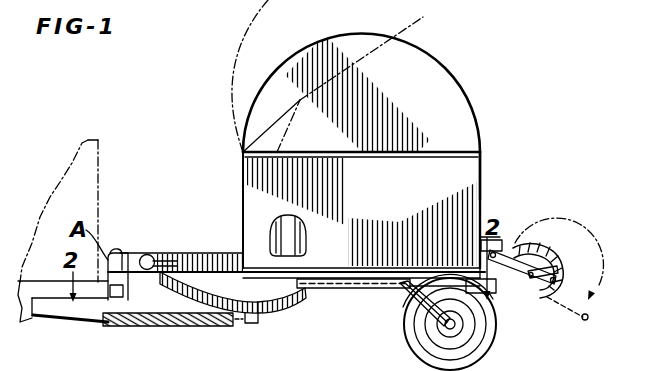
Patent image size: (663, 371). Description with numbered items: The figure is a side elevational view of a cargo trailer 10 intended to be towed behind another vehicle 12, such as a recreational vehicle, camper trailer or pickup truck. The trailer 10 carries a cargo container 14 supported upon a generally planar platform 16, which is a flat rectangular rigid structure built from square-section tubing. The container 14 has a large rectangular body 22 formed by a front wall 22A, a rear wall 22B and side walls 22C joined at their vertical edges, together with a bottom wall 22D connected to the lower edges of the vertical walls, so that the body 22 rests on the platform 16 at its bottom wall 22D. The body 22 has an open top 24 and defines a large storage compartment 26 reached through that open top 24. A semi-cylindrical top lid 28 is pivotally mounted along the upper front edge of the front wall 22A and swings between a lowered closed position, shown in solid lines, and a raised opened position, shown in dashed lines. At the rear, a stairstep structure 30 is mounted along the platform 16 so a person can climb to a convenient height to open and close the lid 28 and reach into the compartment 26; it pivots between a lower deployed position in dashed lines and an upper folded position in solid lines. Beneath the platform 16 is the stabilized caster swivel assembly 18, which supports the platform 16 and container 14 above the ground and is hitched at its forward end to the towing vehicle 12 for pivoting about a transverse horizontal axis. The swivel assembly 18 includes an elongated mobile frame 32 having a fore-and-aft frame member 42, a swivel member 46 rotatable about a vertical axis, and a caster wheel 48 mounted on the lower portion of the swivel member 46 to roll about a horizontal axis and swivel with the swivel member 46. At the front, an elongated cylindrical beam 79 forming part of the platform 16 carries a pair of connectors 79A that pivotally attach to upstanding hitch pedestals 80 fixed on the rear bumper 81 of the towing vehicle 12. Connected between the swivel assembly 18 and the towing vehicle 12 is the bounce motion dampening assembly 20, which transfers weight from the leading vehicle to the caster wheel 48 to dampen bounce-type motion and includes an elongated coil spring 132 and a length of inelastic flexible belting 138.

The cargo trailer 10 is at (510, 104).
The towing vehicle 12 is at (98, 147).
The cargo container 14 is at (488, 176).
The planar platform 16 is at (210, 256).
The stabilized caster swivel assembly 18 is at (372, 300).
The bounce motion dampening assembly 20 is at (213, 333).
The rectangular body 22 is at (484, 213).
The front wall 22A is at (243, 172).
The rear wall 22B is at (482, 154).
The side wall 22C is at (396, 212).
The bottom wall 22D is at (483, 314).
The open top 24 is at (452, 150).
The storage compartment 26 is at (286, 232).
The semi-cylindrical top lid 28 is at (428, 58).
The stairstep structure 30 is at (545, 256).
The elongated mobile frame 32 is at (338, 293).
The frame member 42 is at (271, 293).
The swivel member 46 is at (412, 340).
The caster wheel 48 is at (492, 333).
The elongated cylindrical beam 79 is at (148, 255).
The connectors 79A is at (128, 256).
The hitch pedestals 80 is at (118, 274).
The rear bumper 81 is at (118, 297).
The coil spring 132 is at (176, 324).
The belting 138 is at (75, 316).